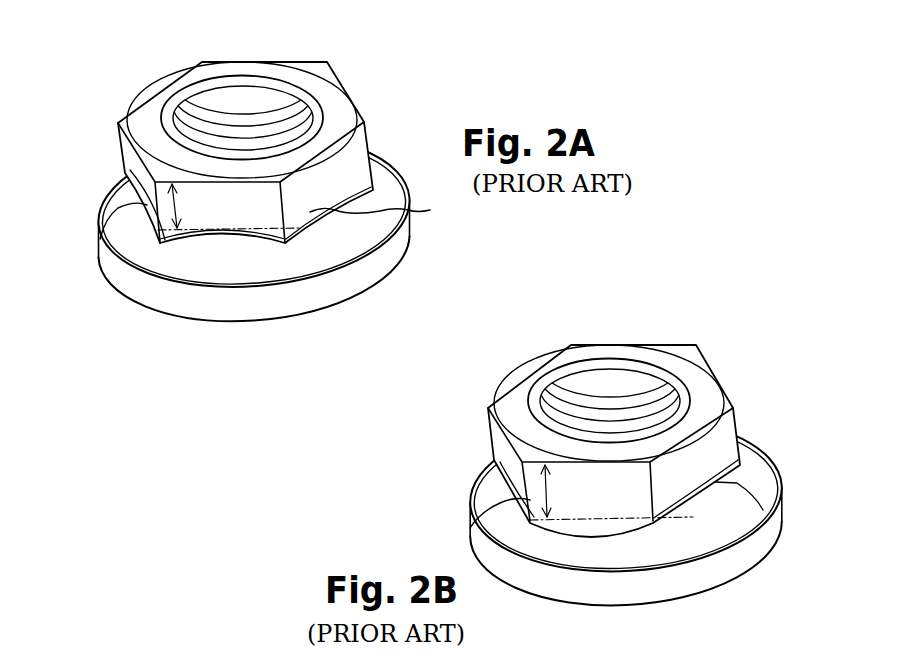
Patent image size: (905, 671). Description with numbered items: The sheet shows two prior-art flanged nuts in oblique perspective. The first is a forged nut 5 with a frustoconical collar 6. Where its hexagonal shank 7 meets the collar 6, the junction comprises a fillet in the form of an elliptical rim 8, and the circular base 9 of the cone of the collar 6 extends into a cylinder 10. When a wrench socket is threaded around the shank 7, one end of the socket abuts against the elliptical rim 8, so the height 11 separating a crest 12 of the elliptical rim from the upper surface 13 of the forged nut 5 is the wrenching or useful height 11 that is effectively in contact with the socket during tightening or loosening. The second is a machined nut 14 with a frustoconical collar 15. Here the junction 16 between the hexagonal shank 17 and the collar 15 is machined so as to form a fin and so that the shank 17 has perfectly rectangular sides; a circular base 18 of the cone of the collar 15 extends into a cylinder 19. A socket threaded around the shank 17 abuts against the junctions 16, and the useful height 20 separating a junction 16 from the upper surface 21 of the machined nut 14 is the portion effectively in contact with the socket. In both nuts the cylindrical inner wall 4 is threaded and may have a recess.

In FIG. 2A, the cylindrical inner wall 4 is at (277, 100).
In FIG. 2B, the cylindrical inner wall 4 is at (629, 462).
In FIG. 2A, the forged nut 5 is at (403, 111).
In FIG. 2A, the frustoconical collar 6 is at (236, 264).
In FIG. 2A, the hexagonal shank 7 is at (215, 207).
In FIG. 2A, the elliptical rim 8 is at (430, 210).
In FIG. 2A, the circular base 9 is at (380, 248).
In FIG. 2A, the cylinder 10 is at (280, 304).
In FIG. 2A, the useful height 11 is at (100, 239).
In FIG. 2A, the crest 12 is at (245, 223).
In FIG. 2A, the upper surface 13 is at (153, 120).
In FIG. 2B, the machined nut 14 is at (498, 386).
In FIG. 2B, the frustoconical collar 15 is at (592, 553).
In FIG. 2B, the junction 16 is at (763, 510).
In FIG. 2B, the hexagonal shank 17 is at (718, 424).
In FIG. 2B, the circular base 18 is at (727, 545).
In FIG. 2B, the cylinder 19 is at (573, 588).
In FIG. 2B, the useful height 20 is at (470, 528).
In FIG. 2B, the upper surface 21 is at (609, 375).